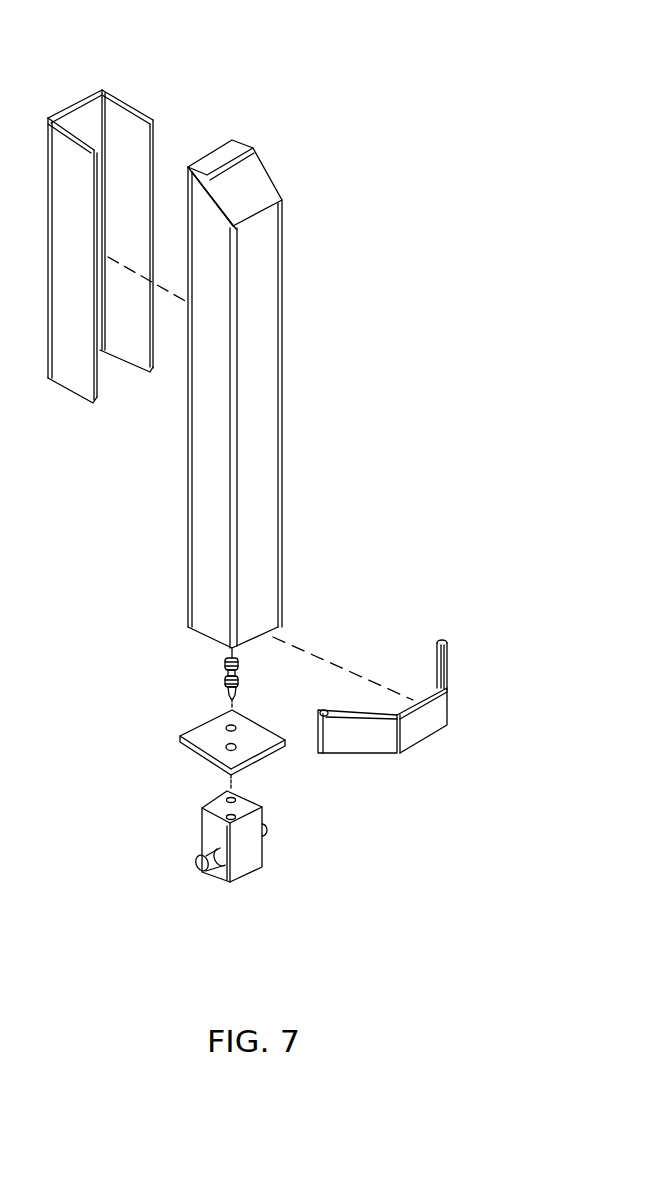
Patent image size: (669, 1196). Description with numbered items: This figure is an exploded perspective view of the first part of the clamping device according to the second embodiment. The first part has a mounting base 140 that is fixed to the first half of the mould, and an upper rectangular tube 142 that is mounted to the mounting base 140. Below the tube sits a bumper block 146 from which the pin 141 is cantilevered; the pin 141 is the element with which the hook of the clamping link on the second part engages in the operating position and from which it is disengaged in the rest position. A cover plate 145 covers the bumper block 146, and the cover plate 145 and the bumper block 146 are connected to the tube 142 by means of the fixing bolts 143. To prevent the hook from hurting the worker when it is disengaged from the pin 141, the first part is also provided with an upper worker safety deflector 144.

The mounting base 140 is at (125, 125).
The pin 141 is at (200, 862).
The upper rectangular tube 142 is at (263, 298).
The fixing bolts 143 is at (238, 683).
The upper worker safety deflector 144 is at (423, 727).
The cover plate 145 is at (245, 742).
The bumper block 146 is at (245, 840).